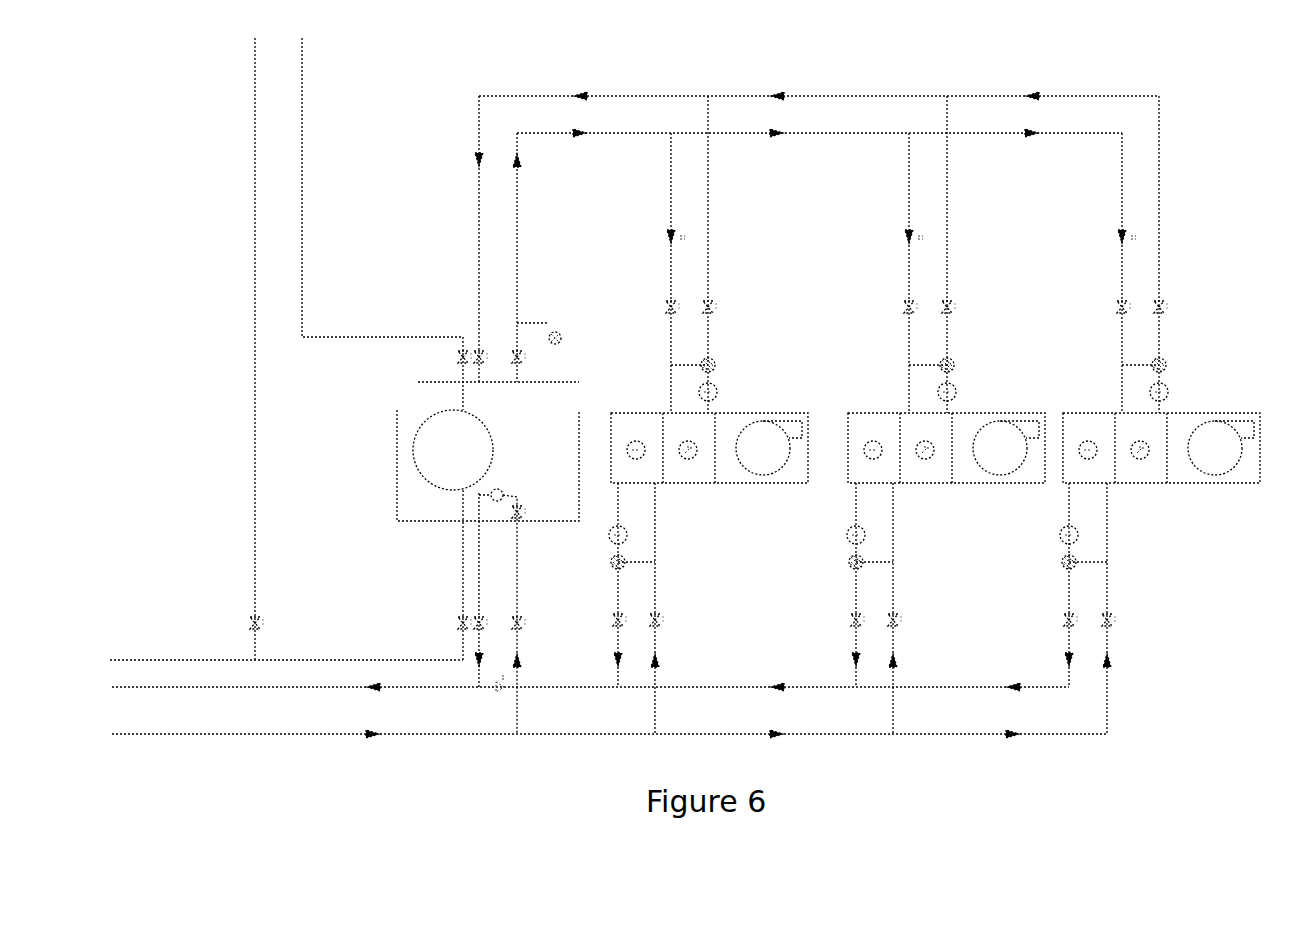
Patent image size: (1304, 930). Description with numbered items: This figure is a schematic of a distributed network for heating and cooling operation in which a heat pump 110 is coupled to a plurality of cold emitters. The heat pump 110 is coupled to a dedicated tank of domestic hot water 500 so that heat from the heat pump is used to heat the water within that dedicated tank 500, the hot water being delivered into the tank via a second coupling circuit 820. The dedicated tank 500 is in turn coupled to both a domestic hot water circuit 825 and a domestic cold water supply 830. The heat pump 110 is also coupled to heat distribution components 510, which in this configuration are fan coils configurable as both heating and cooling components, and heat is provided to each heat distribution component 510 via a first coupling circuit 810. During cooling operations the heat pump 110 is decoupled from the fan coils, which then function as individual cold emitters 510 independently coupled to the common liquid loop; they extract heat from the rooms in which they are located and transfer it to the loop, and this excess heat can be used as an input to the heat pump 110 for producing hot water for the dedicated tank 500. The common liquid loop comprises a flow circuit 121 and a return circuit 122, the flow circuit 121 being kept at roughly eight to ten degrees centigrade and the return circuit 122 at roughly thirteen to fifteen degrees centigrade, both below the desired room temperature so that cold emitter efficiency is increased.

The heat pump 110 is at (578, 383).
The flow circuit 121 is at (1107, 734).
The return circuit 122 is at (932, 687).
The dedicated tank of domestic hot water 500 is at (437, 437).
The heat distribution component 510 is at (771, 430).
The first coupling circuit 810 is at (604, 142).
The second coupling circuit 820 is at (606, 88).
The domestic hot water circuit 825 is at (302, 170).
The domestic cold water supply 830 is at (173, 660).